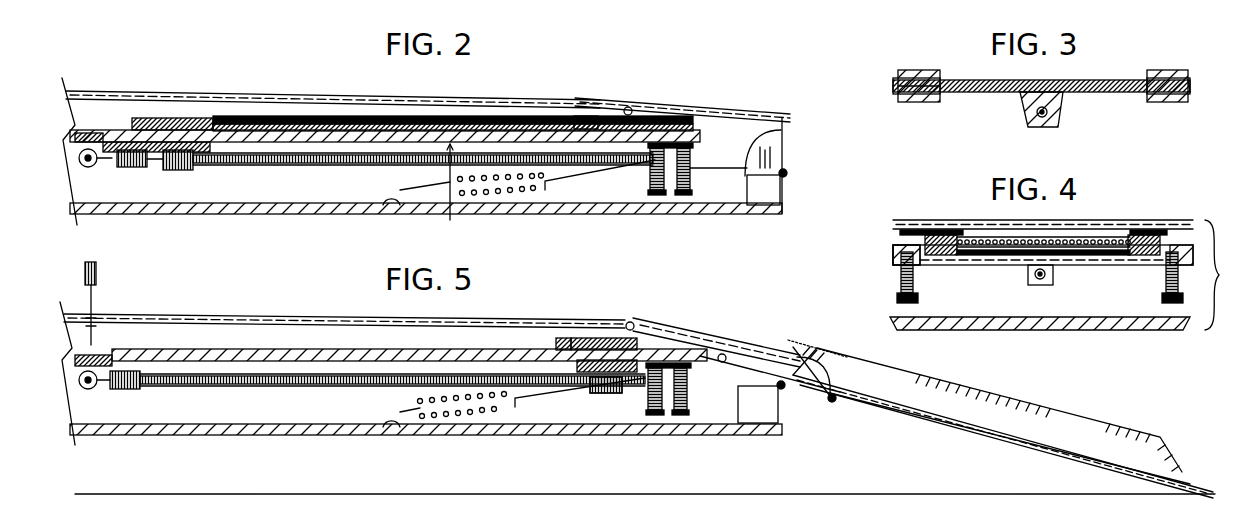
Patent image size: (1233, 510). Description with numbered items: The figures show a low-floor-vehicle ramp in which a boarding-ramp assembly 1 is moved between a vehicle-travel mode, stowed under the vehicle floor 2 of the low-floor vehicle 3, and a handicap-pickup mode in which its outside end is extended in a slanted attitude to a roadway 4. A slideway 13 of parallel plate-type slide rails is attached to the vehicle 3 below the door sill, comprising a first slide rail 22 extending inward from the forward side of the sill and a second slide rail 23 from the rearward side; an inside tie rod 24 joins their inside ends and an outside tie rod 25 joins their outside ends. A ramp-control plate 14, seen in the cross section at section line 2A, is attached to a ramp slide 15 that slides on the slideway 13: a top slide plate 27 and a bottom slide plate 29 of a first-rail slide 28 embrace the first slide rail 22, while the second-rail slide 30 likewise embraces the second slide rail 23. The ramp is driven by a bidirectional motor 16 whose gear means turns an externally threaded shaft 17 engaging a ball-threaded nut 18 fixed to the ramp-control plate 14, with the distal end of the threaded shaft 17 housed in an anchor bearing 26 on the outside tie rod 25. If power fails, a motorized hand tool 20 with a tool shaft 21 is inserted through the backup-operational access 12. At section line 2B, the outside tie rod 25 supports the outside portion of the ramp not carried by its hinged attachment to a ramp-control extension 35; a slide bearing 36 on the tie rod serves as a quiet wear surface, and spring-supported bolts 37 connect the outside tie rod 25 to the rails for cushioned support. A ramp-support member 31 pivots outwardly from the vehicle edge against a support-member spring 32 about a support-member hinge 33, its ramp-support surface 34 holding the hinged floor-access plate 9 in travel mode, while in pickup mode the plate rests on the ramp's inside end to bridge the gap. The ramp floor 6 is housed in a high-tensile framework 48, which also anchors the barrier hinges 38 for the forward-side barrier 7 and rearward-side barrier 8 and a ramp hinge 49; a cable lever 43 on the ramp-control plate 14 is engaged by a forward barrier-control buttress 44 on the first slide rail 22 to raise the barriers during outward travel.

In FIG. 4, the boarding-ramp assembly 1 is at (893, 236).
In FIG. 5, the boarding-ramp assembly 1 is at (1050, 388).
In FIG. 2, the vehicle floor 2 is at (271, 97).
In FIG. 5, the vehicle floor 2 is at (250, 313).
In FIG. 2, the section line 2A-2A' 2A is at (130, 187).
In FIG. 2, the section line 2B-2B' 2B is at (682, 232).
In FIG. 2, the low-floor vehicle 3 is at (410, 200).
In FIG. 4, the low-floor vehicle 3 is at (1107, 322).
In FIG. 5, the low-floor vehicle 3 is at (385, 428).
In FIG. 5, the roadway 4 is at (552, 492).
In FIG. 4, the ramp floor 6 is at (965, 236).
In FIG. 4, the forward-side barrier 7 is at (1152, 230).
In FIG. 4, the rearward-side barrier 8 is at (924, 232).
In FIG. 5, the rearward-side barrier 8 is at (912, 388).
In FIG. 2, the hinged floor-access plate 9 is at (716, 112).
In FIG. 4, the hinged floor-access plate 9 is at (1140, 222).
In FIG. 5, the hinged floor-access plate 9 is at (690, 328).
In FIG. 2, the backup-operational access 12 is at (64, 80).
In FIG. 5, the backup-operational access 12 is at (60, 303).
In FIG. 2, the slideway 13 is at (449, 195).
In FIG. 5, the slideway 13 is at (316, 334).
In FIG. 3, the ramp-control plate 14 is at (982, 94).
In FIG. 2, the ramp slide 15 is at (196, 108).
In FIG. 5, the ramp slide 15 is at (615, 336).
In FIG. 2, the bidirectional motor 16 is at (78, 205).
In FIG. 5, the bidirectional motor 16 is at (86, 400).
In FIG. 2, the threaded shaft 17 is at (260, 166).
In FIG. 3, the threaded shaft 17 is at (1030, 114).
In FIG. 4, the threaded shaft 17 is at (1030, 280).
In FIG. 5, the threaded shaft 17 is at (208, 378).
In FIG. 2, the threaded nut 18 is at (172, 172).
In FIG. 3, the threaded nut 18 is at (1064, 104).
In FIG. 5, the threaded nut 18 is at (608, 396).
In FIG. 5, the motorized hand tool 20 is at (98, 268).
In FIG. 5, the tool shaft 21 is at (94, 305).
In FIG. 3, the first slide rail 22 is at (1190, 94).
In FIG. 4, the first slide rail 22 is at (1195, 220).
In FIG. 2, the second slide rail 23 is at (320, 167).
In FIG. 3, the second slide rail 23 is at (900, 103).
In FIG. 4, the second slide rail 23 is at (893, 250).
In FIG. 5, the second slide rail 23 is at (282, 362).
In FIG. 2, the inside tie rod 24 is at (137, 116).
In FIG. 5, the inside tie rod 24 is at (139, 392).
In FIG. 2, the outside tie rod 25 is at (648, 160).
In FIG. 4, the outside tie rod 25 is at (982, 266).
In FIG. 5, the outside tie rod 25 is at (660, 362).
In FIG. 2, the anchor bearing 26 is at (650, 172).
In FIG. 4, the anchor bearing 26 is at (1053, 280).
In FIG. 5, the anchor bearing 26 is at (681, 385).
In FIG. 3, the top slide plate 27 is at (905, 70).
In FIG. 3, the first-rail slide 28 is at (1150, 64).
In FIG. 3, the bottom slide plate 29 is at (934, 103).
In FIG. 3, the second-rail slide 30 is at (941, 64).
In FIG. 2, the ramp-support member 31 is at (779, 149).
In FIG. 5, the ramp-support member 31 is at (793, 395).
In FIG. 2, the support-member spring 32 is at (525, 190).
In FIG. 5, the support-member spring 32 is at (505, 404).
In FIG. 2, the support-member hinge 33 is at (787, 173).
In FIG. 5, the support-member hinge 33 is at (829, 362).
In FIG. 2, the ramp-support surface 34 is at (784, 118).
In FIG. 5, the ramp-support surface 34 is at (832, 402).
In FIG. 5, the ramp-control extension 35 is at (724, 355).
In FIG. 4, the slide bearing 36 is at (942, 266).
In FIG. 2, the spring-supported bolts 37 is at (700, 176).
In FIG. 4, the spring-supported bolts 37 is at (897, 291).
In FIG. 5, the spring-supported bolts 37 is at (690, 398).
In FIG. 4, the barrier hinges 38 is at (902, 223).
In FIG. 5, the barrier hinges 38 is at (1035, 440).
In FIG. 2, the cable lever 43 is at (160, 117).
In FIG. 5, the cable lever 43 is at (556, 340).
In FIG. 2, the forward barrier-control buttress 44 is at (578, 106).
In FIG. 5, the forward barrier-control buttress 44 is at (574, 335).
In FIG. 4, the high-tensile framework 48 is at (1100, 266).
In FIG. 5, the high-tensile framework 48 is at (945, 414).
In FIG. 5, the ramp hinge 49 is at (742, 342).